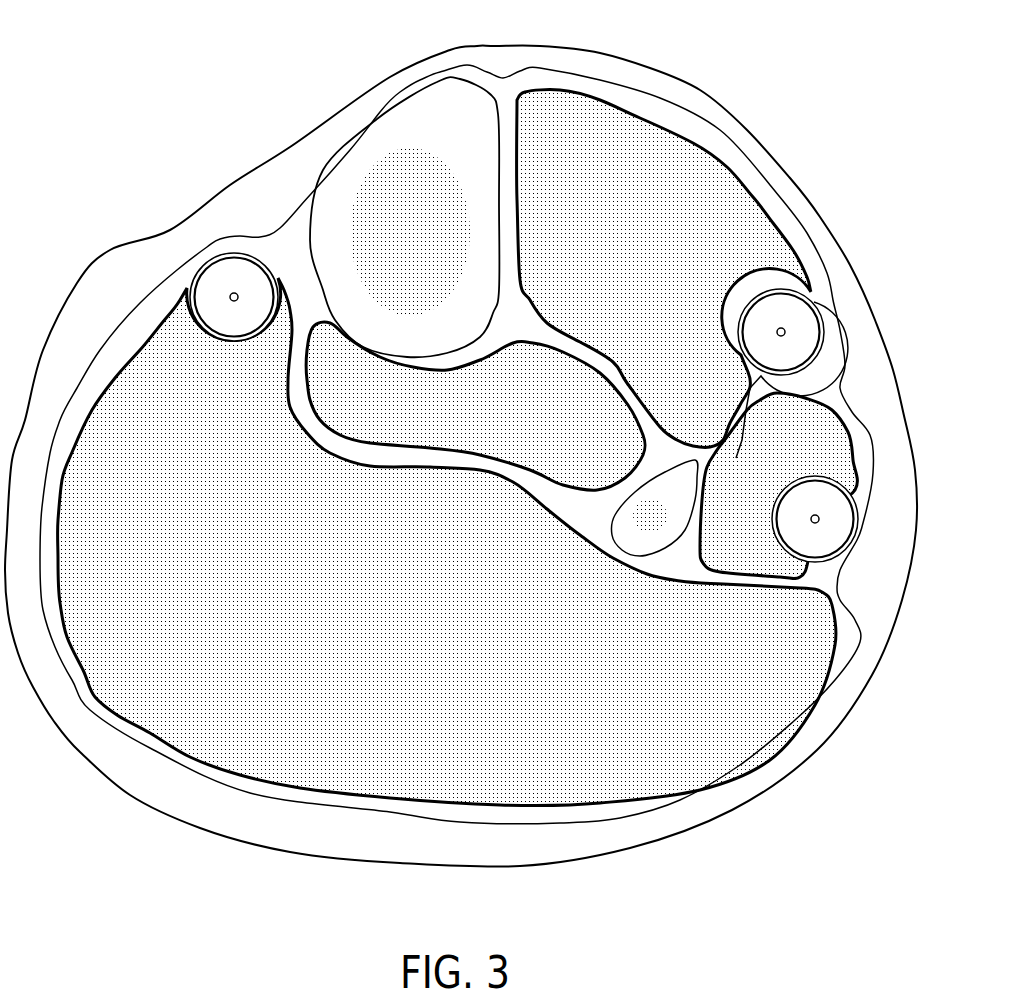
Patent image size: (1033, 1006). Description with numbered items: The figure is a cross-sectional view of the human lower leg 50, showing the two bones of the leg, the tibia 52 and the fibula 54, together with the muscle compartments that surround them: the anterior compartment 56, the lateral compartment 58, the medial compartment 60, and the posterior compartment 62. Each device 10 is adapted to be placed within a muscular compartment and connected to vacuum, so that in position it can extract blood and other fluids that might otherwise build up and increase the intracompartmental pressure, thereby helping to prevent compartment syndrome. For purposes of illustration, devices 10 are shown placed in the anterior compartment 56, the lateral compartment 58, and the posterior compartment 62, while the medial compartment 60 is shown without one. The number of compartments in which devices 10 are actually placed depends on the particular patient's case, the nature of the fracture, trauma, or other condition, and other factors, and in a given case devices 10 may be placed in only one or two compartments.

The lower leg 50 is at (205, 130).
The device 10 is at (208, 250).
The tibia 52 is at (385, 150).
The fibula 54 is at (668, 538).
The anterior compartment 56 is at (655, 160).
The lateral compartment 58 is at (812, 432).
The medial compartment 60 is at (400, 417).
The posterior compartment 62 is at (145, 672).